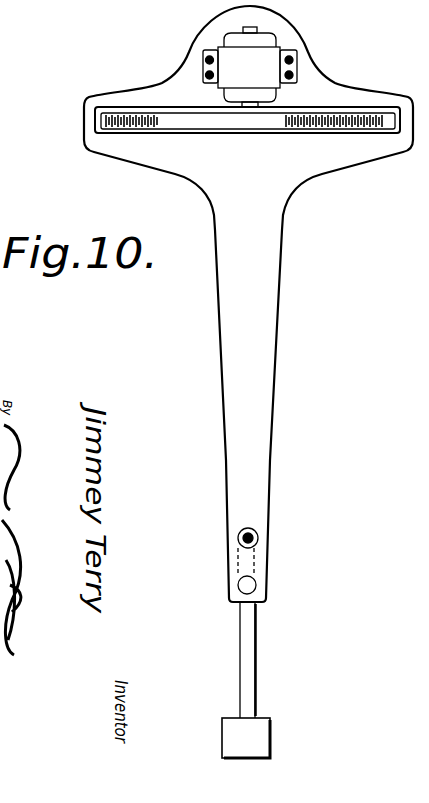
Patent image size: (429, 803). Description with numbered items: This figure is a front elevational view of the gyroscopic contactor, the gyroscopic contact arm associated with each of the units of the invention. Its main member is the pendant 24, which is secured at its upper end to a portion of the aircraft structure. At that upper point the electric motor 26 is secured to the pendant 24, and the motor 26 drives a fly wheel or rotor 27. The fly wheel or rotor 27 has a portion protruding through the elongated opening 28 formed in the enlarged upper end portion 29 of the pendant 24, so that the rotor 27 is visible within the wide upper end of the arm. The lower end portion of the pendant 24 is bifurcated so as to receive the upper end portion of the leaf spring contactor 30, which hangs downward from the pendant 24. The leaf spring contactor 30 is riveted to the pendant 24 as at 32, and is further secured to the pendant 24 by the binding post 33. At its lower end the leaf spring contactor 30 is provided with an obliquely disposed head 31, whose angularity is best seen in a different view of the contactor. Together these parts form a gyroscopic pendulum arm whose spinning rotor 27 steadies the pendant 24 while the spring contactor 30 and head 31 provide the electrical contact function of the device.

The pendant 24 is at (262, 445).
The electric motor 26 is at (263, 62).
The fly wheel or rotor 27 is at (287, 120).
The elongated opening 28 is at (118, 133).
The enlarged upper end portion 29 is at (357, 153).
The leaf spring contactor 30 is at (256, 640).
The obliquely disposed head 31 is at (272, 737).
The rivet 32 is at (250, 586).
The binding post 33 is at (258, 535).